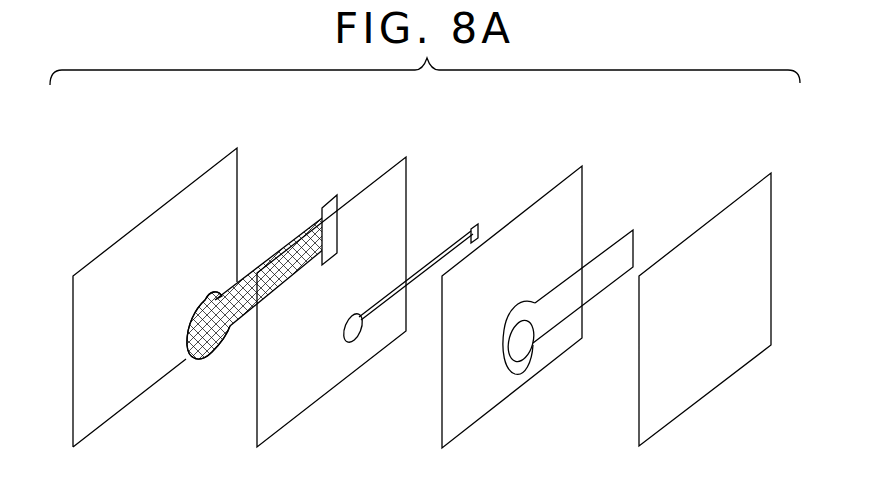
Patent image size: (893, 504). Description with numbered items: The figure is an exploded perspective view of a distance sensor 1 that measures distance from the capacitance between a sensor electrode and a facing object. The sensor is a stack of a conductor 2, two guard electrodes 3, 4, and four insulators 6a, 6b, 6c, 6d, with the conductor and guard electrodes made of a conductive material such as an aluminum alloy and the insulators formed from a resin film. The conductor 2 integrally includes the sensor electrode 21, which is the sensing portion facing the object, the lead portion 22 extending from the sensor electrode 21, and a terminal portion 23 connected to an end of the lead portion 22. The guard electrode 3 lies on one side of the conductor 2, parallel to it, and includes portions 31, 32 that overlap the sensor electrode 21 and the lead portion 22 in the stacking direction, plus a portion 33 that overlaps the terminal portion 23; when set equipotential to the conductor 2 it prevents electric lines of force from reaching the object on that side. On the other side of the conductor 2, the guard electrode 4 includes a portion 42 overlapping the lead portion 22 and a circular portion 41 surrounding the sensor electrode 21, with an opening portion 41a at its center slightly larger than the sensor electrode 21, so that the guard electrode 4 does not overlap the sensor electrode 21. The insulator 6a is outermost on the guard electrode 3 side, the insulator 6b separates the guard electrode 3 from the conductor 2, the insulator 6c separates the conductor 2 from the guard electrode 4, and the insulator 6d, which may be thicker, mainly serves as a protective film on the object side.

The distance sensor 1 is at (736, 135).
The conductor 2 is at (409, 259).
The guard electrode 3 is at (262, 268).
The guard electrode 4 is at (570, 294).
The insulator 6a is at (102, 429).
The insulator 6b is at (313, 403).
The insulator 6c is at (490, 412).
The insulator 6d is at (689, 408).
The sensor electrode 21 is at (353, 344).
The lead portion 22 is at (432, 260).
The terminal portion 23 is at (476, 224).
The portion 31 is at (198, 362).
The portion 32 is at (262, 263).
The portion 33 is at (325, 204).
The portion 41 is at (512, 376).
The opening portion 41a is at (522, 344).
The portion 42 is at (597, 299).